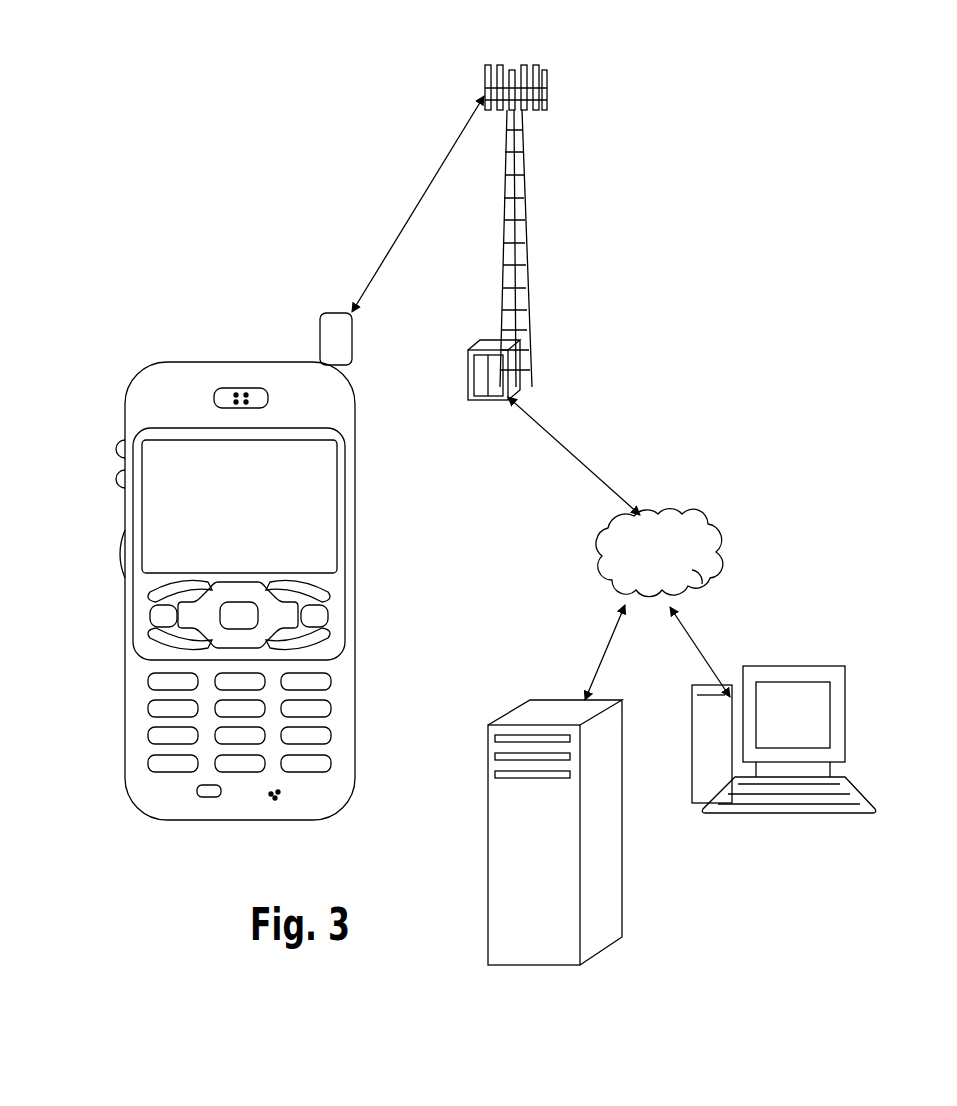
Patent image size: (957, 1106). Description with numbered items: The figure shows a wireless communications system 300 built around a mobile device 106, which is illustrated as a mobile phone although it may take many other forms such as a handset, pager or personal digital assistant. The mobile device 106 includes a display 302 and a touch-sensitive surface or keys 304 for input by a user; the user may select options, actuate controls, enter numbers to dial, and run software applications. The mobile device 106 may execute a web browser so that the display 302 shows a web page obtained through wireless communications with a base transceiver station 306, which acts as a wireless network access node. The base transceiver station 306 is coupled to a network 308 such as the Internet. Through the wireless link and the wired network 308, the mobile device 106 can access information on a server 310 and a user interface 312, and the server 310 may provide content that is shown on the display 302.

The wireless communications system 300 is at (344, 92).
The mobile device 106 is at (148, 822).
The display 302 is at (334, 487).
The keys 304 is at (123, 590).
The base transceiver station 306 is at (500, 254).
The network 308 is at (610, 596).
The server 310 is at (490, 802).
The user interface 312 is at (697, 790).